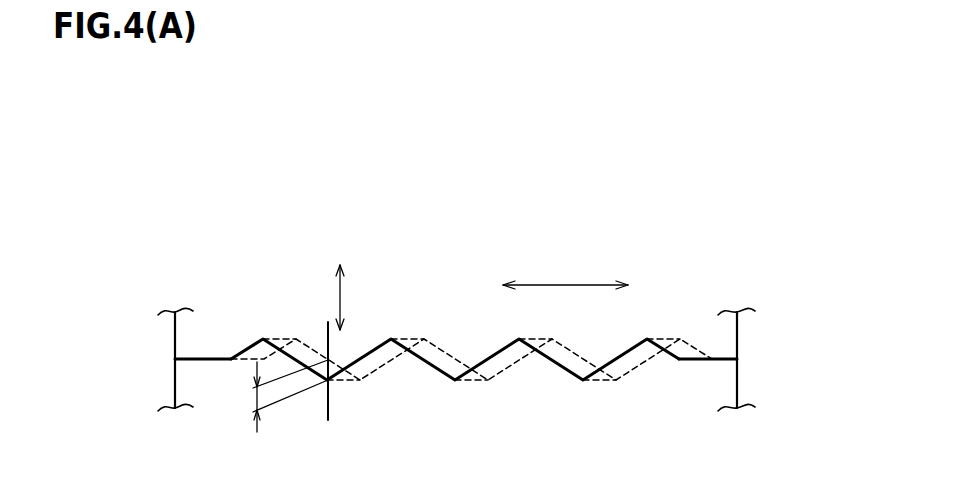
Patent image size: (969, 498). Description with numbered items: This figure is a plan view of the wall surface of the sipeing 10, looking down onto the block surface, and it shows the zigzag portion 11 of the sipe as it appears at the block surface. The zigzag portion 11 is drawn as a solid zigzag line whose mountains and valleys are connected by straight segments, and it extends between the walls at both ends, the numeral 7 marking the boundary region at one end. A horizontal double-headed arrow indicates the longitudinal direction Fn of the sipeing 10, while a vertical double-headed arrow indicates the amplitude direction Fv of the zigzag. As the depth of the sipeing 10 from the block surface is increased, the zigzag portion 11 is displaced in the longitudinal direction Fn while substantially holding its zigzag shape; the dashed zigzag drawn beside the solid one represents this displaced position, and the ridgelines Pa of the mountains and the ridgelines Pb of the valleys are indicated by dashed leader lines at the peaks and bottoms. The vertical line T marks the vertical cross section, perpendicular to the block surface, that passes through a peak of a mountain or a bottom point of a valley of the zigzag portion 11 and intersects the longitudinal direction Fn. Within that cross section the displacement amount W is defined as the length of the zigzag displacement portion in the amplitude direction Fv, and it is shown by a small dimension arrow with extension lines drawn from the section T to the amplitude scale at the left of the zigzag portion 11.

The zigzag portion 11 is at (713, 190).
The sipeing 10 is at (725, 357).
The wall 7 is at (737, 390).
The vertical cross section T is at (327, 325).
The amplitude direction Fv is at (340, 297).
The longitudinal direction Fn is at (565, 285).
The ridgeline Pa is at (343, 383).
The ridgeline Pb is at (413, 338).
The displacement amount W is at (277, 396).